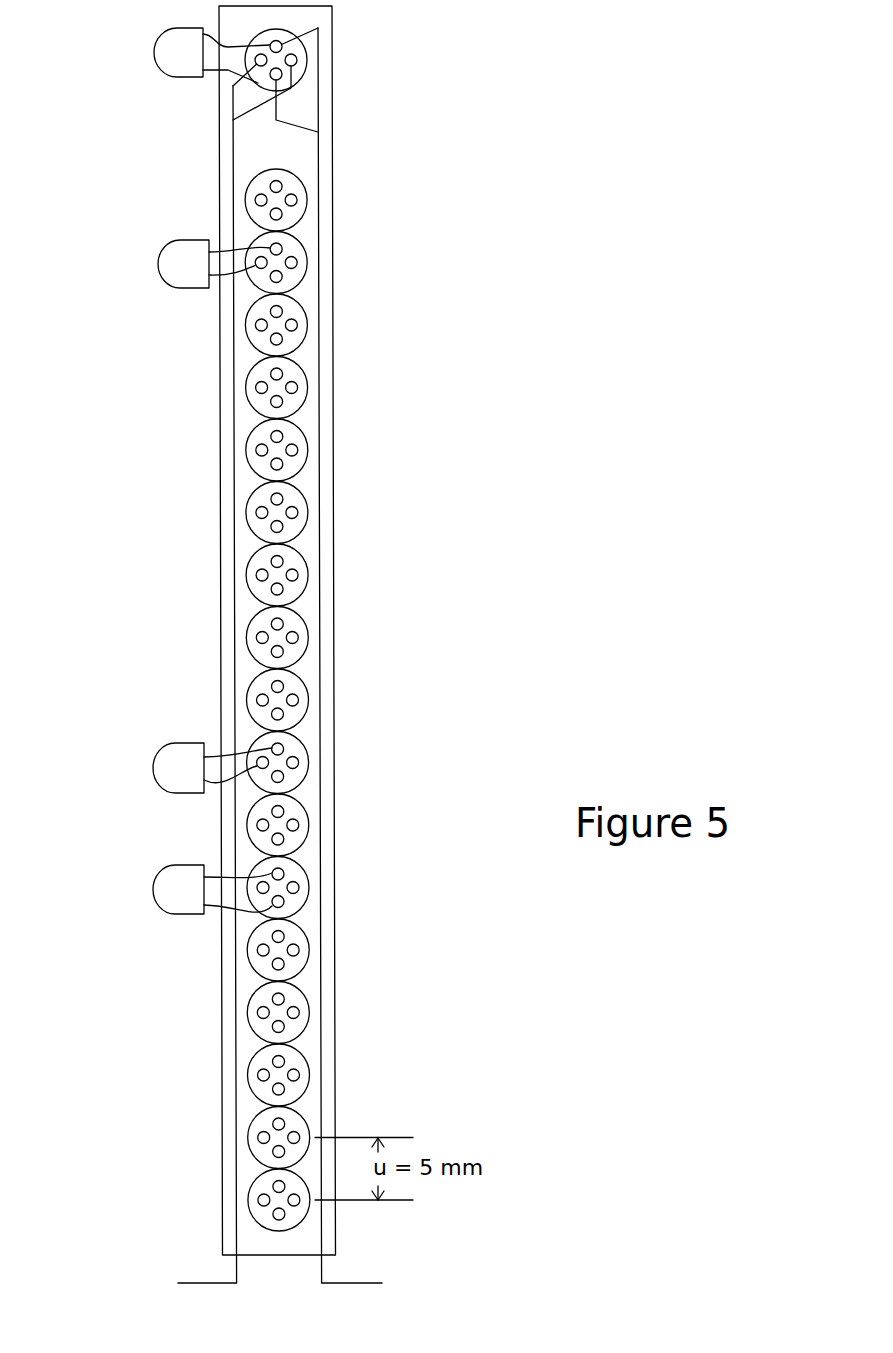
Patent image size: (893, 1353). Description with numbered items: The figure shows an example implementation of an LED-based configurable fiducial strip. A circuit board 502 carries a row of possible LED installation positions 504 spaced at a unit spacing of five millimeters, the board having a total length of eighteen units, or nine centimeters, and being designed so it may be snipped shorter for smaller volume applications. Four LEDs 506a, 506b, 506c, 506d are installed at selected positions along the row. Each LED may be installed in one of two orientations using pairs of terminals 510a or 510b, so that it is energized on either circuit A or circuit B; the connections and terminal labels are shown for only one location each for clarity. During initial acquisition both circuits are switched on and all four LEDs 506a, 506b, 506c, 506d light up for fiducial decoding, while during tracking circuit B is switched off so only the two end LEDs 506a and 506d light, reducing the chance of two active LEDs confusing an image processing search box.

The circuit board 502 is at (332, 32).
The LED installation positions 504 is at (277, 630).
The LED 506a is at (152, 903).
The LED 506b is at (152, 780).
The LED 506c is at (158, 272).
The LED 506d is at (154, 47).
The pair of terminals 510a is at (273, 407).
The pair of terminals 510b is at (273, 354).